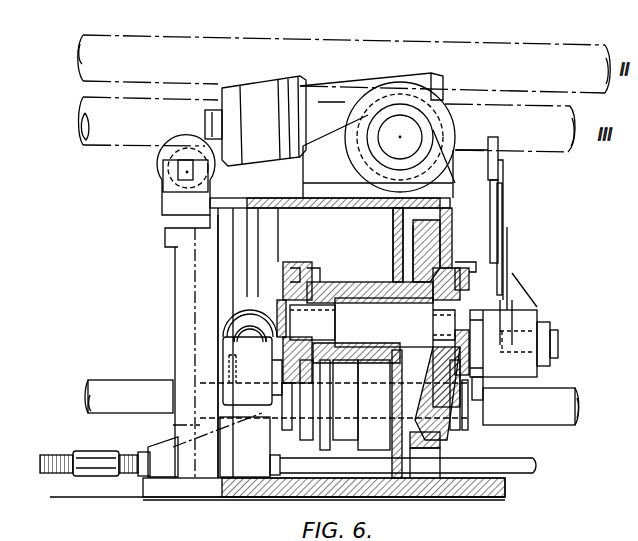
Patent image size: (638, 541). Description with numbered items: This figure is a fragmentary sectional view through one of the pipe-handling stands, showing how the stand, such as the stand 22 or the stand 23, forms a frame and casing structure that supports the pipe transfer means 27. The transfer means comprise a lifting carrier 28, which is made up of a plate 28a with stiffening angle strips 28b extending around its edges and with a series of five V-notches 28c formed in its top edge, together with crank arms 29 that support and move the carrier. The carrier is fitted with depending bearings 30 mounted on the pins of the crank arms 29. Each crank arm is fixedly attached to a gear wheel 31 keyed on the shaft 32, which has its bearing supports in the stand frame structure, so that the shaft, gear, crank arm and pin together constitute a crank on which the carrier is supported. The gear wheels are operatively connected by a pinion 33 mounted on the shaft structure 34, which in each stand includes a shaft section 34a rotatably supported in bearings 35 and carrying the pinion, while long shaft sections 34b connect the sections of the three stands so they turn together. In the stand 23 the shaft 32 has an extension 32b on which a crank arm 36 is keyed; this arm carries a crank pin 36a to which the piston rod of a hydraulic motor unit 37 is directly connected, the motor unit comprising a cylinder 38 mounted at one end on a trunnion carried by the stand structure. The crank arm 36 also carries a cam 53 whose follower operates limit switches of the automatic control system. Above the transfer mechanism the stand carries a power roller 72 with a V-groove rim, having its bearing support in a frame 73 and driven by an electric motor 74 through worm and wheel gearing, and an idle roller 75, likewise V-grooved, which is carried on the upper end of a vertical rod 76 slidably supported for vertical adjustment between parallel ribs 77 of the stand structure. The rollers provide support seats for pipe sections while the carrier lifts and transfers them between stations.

The stand 22 is at (274, 198).
The stand 23 is at (160, 260).
The pipe transfer means 27 is at (528, 293).
The carrier 28 is at (505, 210).
The plate 28a is at (504, 170).
The stiffening angle strips 28b is at (494, 198).
The V-notches 28c is at (500, 148).
The crank arms 29 is at (456, 272).
The depending bearings 30 is at (520, 320).
The gear wheels 31 is at (444, 228).
The shaft 32 is at (368, 312).
The extension 32b is at (318, 320).
The pinion 33 is at (423, 450).
The shaft structure 34 is at (100, 378).
The shaft section 34a is at (394, 443).
The long shaft sections 34b is at (133, 390).
The bearings 35 is at (347, 432).
The crank arm 36 is at (290, 262).
The crank pin 36a is at (252, 390).
The hydraulic motor unit 37 is at (246, 316).
The cylinder 38 is at (257, 318).
The cam 53 is at (315, 290).
The power rollers 72 is at (452, 124).
The frame 73 is at (453, 190).
The electric motor 74 is at (252, 82).
The idle rollers 75 is at (161, 163).
The vertical rod 76 is at (182, 220).
The parallel ribs 77 is at (187, 288).